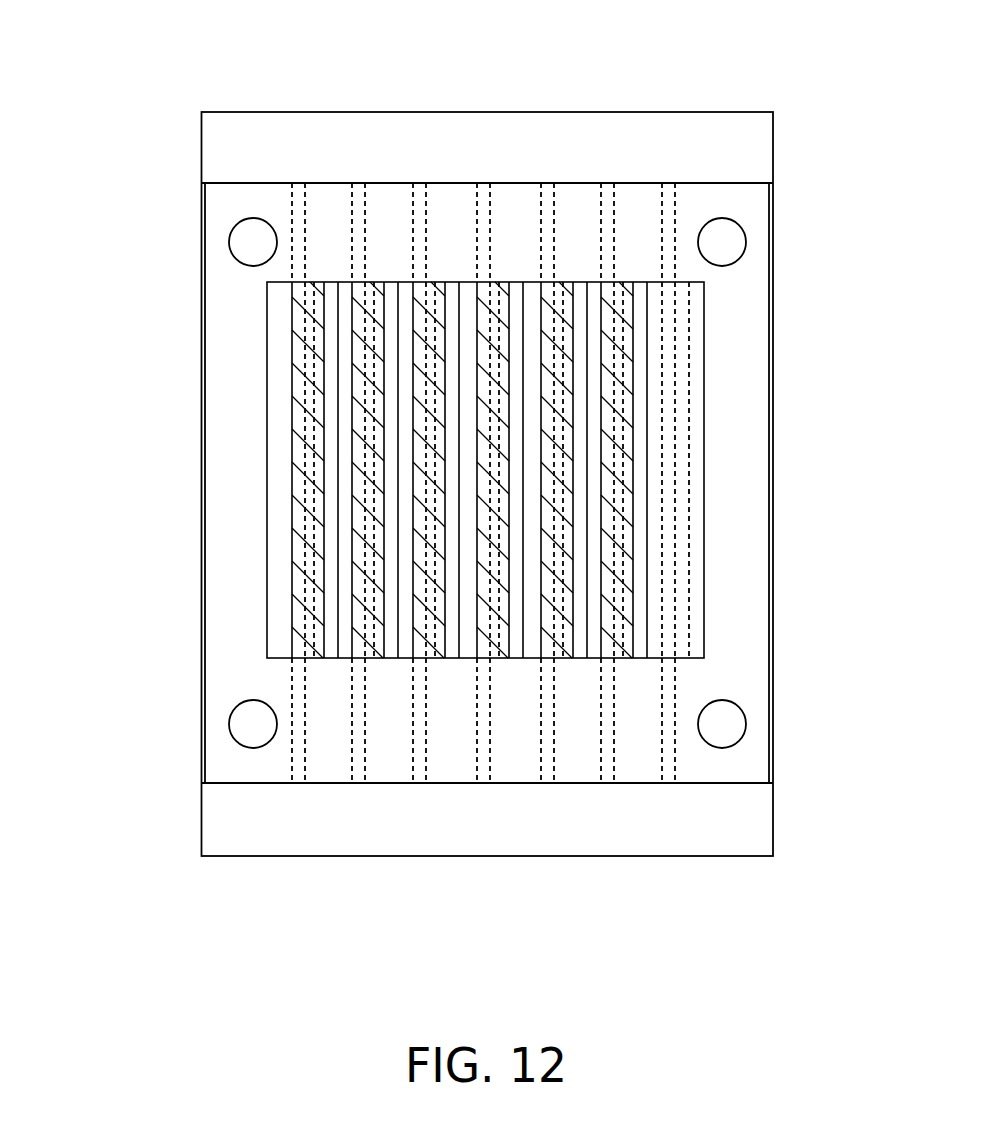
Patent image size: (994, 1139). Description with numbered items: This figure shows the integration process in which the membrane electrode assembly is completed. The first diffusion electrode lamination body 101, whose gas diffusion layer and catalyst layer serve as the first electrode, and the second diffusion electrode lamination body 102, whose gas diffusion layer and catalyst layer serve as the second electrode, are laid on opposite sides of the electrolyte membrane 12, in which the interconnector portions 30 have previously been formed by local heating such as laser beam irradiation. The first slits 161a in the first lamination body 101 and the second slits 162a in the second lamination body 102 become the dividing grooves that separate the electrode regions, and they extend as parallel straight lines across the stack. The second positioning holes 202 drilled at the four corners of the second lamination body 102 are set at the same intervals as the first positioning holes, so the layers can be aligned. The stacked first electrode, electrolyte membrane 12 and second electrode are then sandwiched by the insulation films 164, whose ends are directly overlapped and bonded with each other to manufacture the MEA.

The electrolyte membrane 12 is at (742, 396).
The interconnector portions 30 is at (683, 648).
The first diffusion electrode lamination body 101 is at (275, 570).
The second diffusion electrode lamination body 102 is at (243, 615).
The first slits 161a is at (328, 643).
The second slits 162a is at (667, 183).
The insulation films 164 is at (707, 143).
The second positioning holes 202 is at (253, 242).